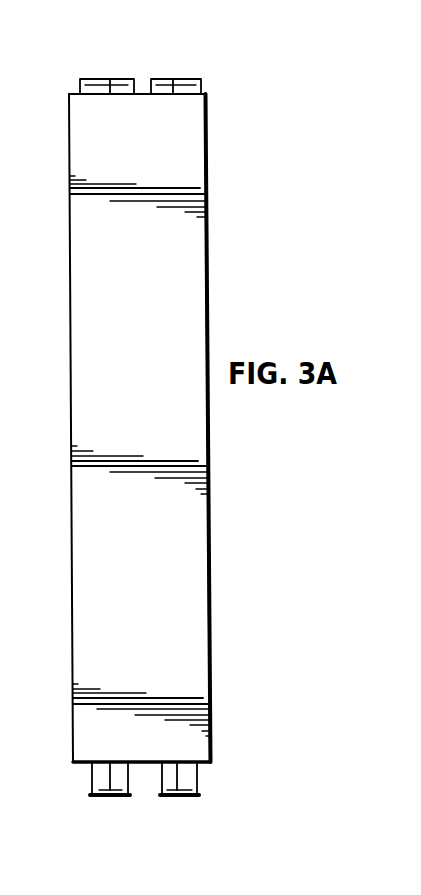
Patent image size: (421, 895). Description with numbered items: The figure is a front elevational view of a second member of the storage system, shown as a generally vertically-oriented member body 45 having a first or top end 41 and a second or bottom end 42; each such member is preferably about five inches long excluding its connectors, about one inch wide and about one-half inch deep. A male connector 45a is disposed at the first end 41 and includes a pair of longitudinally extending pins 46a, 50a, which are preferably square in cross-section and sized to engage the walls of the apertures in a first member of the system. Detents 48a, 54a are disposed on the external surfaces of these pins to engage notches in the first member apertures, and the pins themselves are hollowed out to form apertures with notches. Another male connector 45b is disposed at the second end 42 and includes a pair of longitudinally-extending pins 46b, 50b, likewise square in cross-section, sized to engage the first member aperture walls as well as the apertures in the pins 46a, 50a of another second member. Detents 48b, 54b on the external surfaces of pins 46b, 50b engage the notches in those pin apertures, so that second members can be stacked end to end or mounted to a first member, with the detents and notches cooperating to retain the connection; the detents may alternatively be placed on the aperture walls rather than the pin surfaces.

The first end 41 is at (208, 96).
The second end 42 is at (213, 759).
The reflector body 45 is at (235, 226).
The male connector 45a is at (154, 54).
The male connector 45b is at (147, 818).
The pin 46a is at (72, 74).
The pin 46b is at (97, 806).
The detent 48a is at (114, 84).
The detent 48b is at (97, 788).
The pin 50a is at (202, 70).
The pin 50b is at (180, 797).
The detent 54a is at (202, 91).
The detent 54b is at (198, 788).